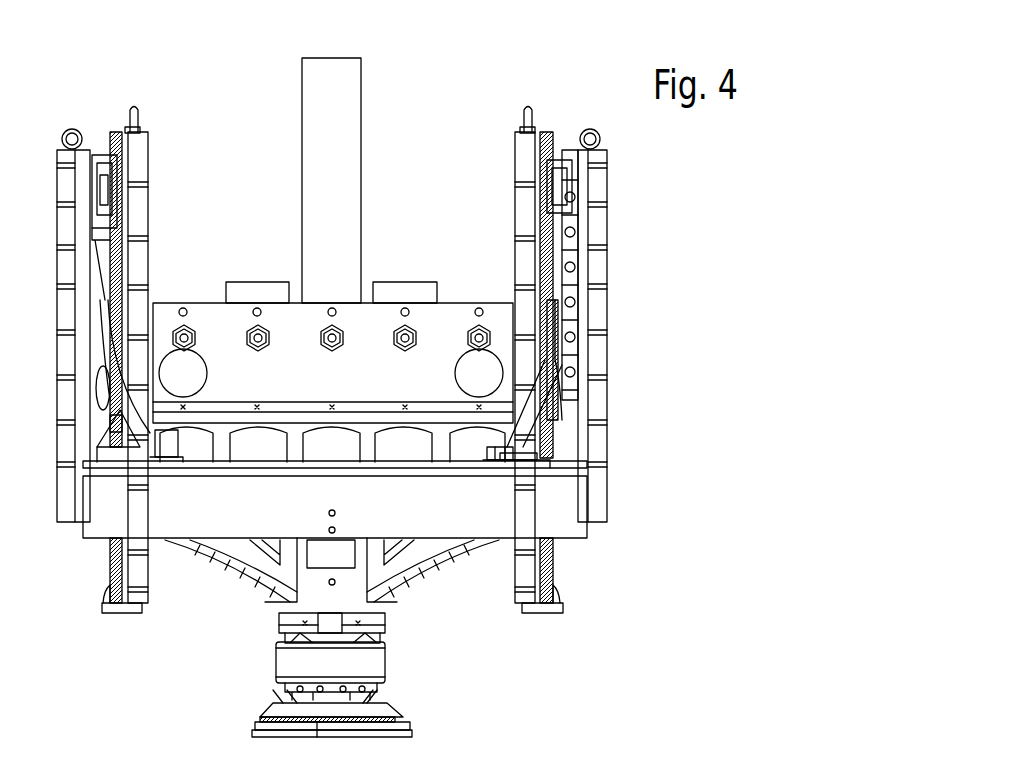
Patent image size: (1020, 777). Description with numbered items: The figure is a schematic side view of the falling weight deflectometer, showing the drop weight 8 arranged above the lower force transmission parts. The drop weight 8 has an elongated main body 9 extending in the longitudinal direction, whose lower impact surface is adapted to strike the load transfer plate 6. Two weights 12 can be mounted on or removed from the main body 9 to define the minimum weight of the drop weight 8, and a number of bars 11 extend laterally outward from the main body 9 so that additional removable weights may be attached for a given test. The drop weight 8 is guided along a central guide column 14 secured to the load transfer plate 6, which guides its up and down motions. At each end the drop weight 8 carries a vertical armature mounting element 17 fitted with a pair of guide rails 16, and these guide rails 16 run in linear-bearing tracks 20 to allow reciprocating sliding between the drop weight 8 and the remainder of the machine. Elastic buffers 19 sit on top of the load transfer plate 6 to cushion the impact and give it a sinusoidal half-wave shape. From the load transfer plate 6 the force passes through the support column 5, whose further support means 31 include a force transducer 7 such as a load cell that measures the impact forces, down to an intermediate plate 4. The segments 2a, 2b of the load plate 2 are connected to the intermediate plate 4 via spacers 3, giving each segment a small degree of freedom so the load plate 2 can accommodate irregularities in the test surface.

The load plate 2 is at (405, 690).
The segment of load plate 2a is at (273, 725).
The segment of load plate 2b is at (373, 733).
The spacers 3 is at (385, 708).
The intermediate plate 4 is at (268, 712).
The support column 5 is at (258, 609).
The load transfer plate 6 is at (472, 473).
The force transducer 7 is at (378, 660).
The drop weight 8 is at (332, 371).
The main body 9 is at (222, 364).
The bars 11 is at (170, 338).
The weights 12 is at (262, 296).
The central guide column 14 is at (333, 78).
The guide rails 16 is at (553, 147).
The vertical armature mounting elements 17 is at (130, 124).
The elastic buffers 19 is at (480, 446).
The tracks 20 is at (555, 175).
The further support means 31 is at (440, 545).